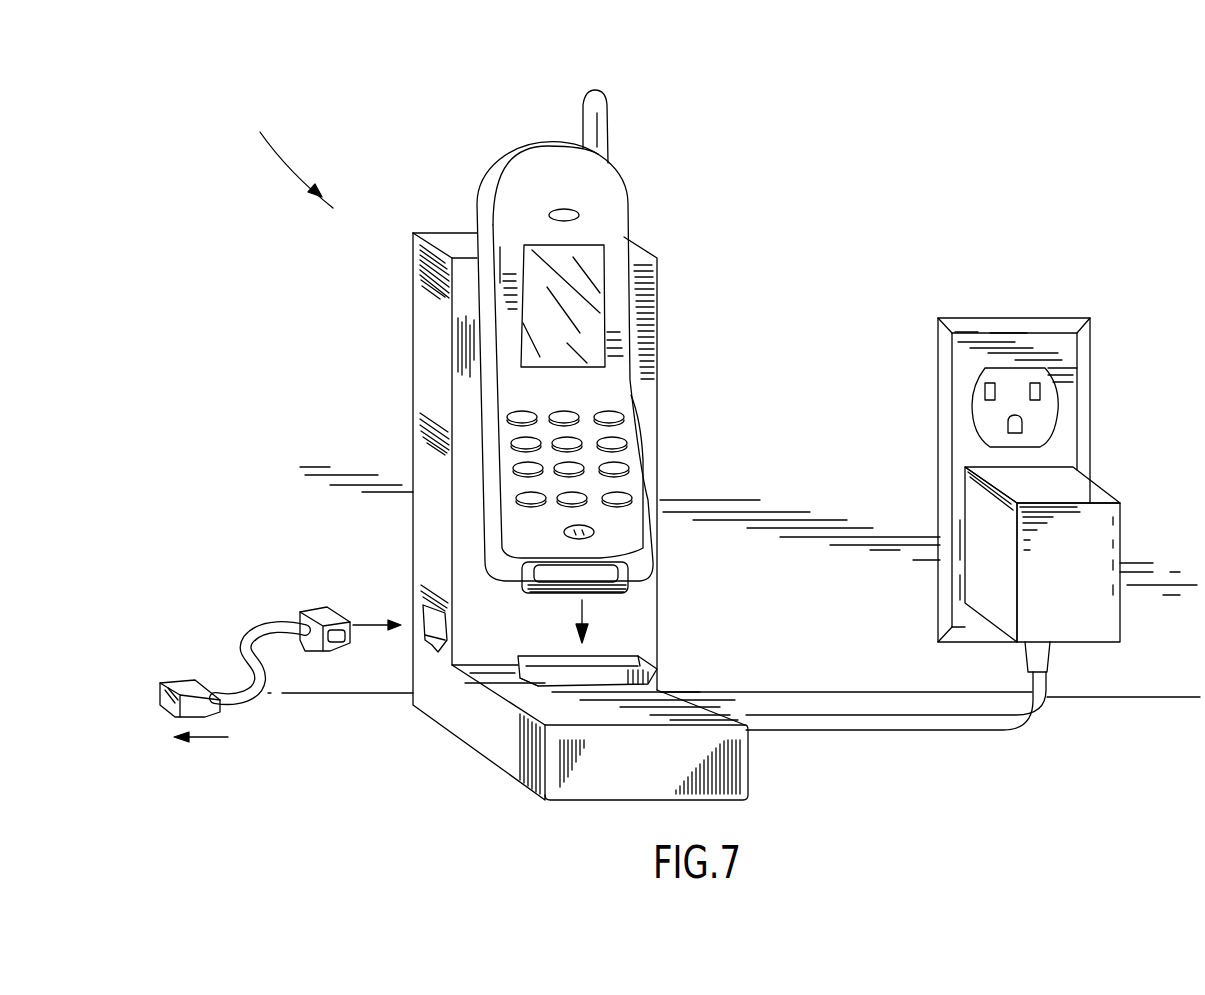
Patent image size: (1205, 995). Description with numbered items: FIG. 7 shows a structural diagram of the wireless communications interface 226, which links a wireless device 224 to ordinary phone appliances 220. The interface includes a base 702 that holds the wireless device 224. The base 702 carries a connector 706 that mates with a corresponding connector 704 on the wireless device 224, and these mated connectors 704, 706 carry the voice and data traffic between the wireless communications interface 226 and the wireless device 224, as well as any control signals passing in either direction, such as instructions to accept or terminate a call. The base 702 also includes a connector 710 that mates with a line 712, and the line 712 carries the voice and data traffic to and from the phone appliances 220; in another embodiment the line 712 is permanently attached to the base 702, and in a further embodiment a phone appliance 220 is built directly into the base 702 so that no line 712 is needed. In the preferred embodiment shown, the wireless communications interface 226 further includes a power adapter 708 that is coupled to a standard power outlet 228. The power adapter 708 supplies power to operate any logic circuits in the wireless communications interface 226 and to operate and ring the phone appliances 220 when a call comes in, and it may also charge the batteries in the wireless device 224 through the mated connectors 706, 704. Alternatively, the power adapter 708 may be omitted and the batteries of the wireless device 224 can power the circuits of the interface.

The phone appliance 220 is at (278, 768).
The wireless device 224 is at (627, 206).
The wireless communications interface 226 is at (245, 123).
The power outlet 228 is at (1020, 317).
The base 702 is at (662, 360).
The connector 704 is at (647, 572).
The connector 706 is at (647, 663).
The power adapter 708 is at (987, 567).
The connector 710 is at (413, 607).
The line 712 is at (310, 605).